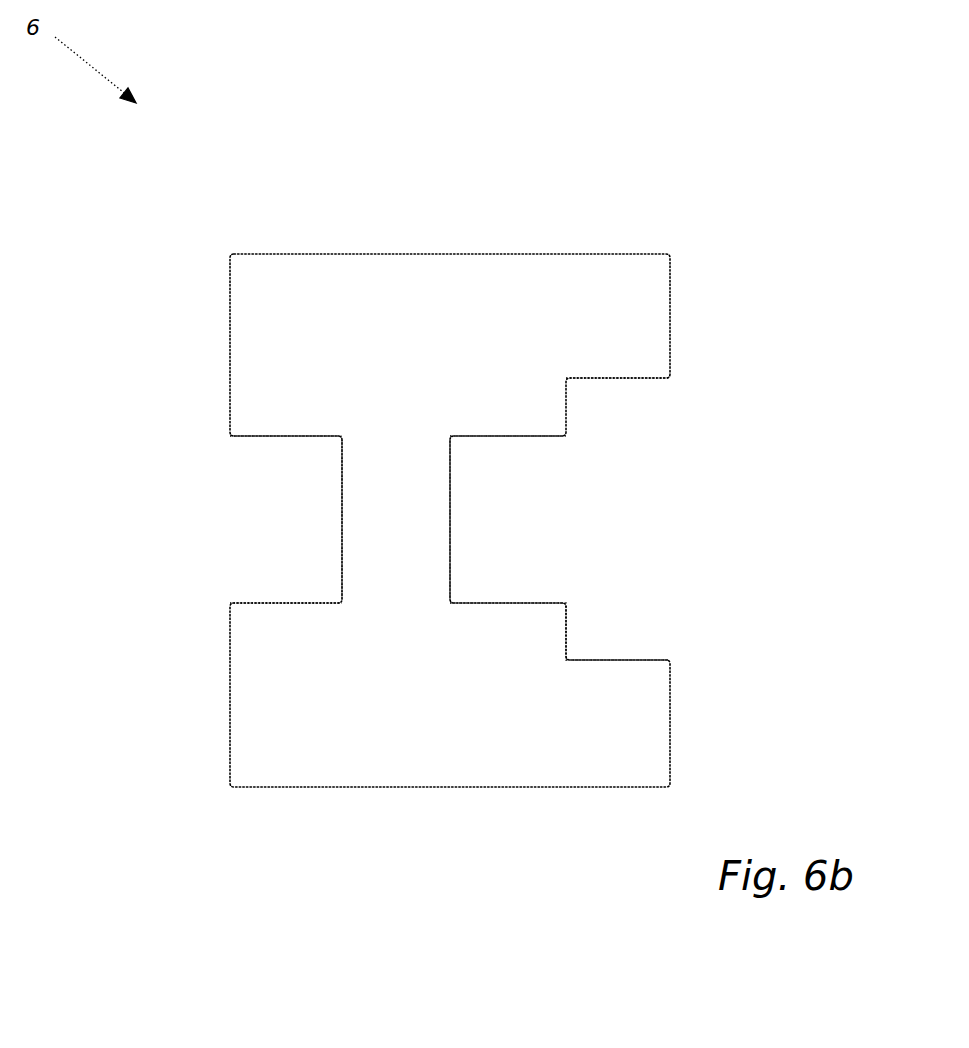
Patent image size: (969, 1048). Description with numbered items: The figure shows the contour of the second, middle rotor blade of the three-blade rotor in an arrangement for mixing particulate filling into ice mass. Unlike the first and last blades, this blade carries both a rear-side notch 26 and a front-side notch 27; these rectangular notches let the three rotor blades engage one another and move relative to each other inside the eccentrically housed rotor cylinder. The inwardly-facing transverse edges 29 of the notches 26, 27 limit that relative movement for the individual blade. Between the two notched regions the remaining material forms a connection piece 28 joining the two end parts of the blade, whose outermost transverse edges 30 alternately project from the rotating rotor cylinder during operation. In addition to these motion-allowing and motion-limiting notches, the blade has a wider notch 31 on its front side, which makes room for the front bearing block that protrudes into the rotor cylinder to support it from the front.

The front-side notch in rotor blade 26 is at (495, 572).
The rear-side notch in rotor blade 27 is at (287, 580).
The connection piece in rotor blade 28 is at (390, 537).
The transverse edges of the notches 29 is at (298, 438).
The outermost transverse edges of the rotor blades 30 is at (409, 254).
The notch for front bearing block 31 is at (610, 403).